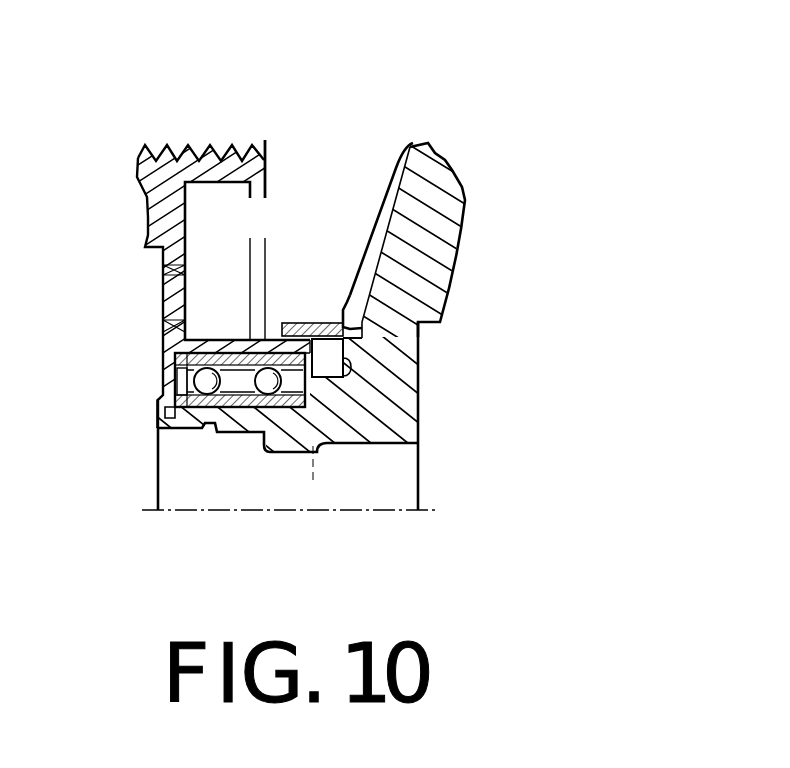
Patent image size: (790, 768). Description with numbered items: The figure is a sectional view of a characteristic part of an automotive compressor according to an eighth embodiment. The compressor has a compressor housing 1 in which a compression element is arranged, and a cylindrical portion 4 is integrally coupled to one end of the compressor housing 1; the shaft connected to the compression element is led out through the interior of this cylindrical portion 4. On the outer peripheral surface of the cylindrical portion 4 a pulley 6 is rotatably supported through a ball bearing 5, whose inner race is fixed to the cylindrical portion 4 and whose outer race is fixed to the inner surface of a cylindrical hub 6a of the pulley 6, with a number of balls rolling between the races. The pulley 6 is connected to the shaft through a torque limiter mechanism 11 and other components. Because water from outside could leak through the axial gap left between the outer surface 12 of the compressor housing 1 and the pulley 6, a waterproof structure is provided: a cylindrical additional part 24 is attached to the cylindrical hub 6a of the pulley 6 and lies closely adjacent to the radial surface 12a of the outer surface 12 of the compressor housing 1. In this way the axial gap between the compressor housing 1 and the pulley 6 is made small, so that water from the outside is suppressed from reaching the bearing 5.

The compressor housing 1 is at (408, 147).
The cylindrical portion 4 is at (333, 425).
The ball bearing 5 is at (162, 382).
The pulley 6 is at (266, 146).
The cylindrical hub 6a is at (230, 338).
The torque limiter mechanism 11 is at (162, 293).
The outer surface 12 is at (375, 212).
The radial surface 12a is at (336, 318).
The cylindrical additional part 24 is at (303, 323).